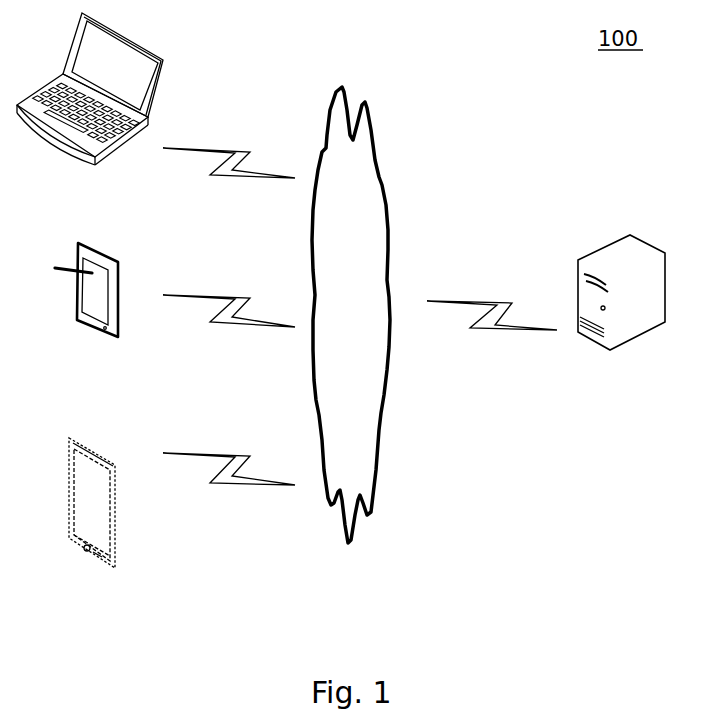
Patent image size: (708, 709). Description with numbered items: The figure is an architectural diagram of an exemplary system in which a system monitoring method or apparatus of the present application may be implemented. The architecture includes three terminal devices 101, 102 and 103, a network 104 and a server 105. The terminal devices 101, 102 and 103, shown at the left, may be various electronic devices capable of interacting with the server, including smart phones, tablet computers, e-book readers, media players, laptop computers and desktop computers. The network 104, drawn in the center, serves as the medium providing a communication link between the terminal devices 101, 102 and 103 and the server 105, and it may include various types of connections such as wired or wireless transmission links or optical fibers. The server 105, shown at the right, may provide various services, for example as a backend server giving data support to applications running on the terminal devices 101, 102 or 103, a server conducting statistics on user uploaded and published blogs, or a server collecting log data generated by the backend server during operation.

The terminal device 101 is at (92, 524).
The terminal device 102 is at (86, 309).
The terminal device 103 is at (90, 105).
The network 104 is at (351, 315).
The server 105 is at (621, 313).